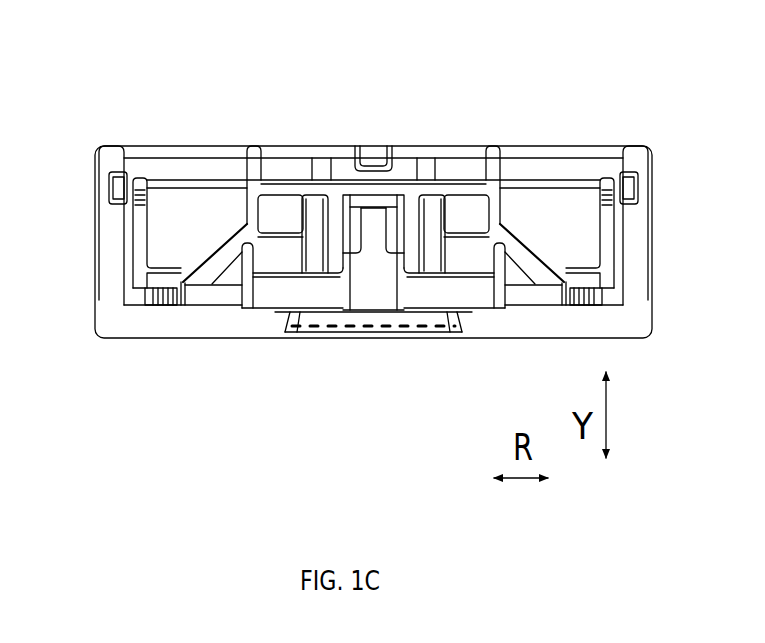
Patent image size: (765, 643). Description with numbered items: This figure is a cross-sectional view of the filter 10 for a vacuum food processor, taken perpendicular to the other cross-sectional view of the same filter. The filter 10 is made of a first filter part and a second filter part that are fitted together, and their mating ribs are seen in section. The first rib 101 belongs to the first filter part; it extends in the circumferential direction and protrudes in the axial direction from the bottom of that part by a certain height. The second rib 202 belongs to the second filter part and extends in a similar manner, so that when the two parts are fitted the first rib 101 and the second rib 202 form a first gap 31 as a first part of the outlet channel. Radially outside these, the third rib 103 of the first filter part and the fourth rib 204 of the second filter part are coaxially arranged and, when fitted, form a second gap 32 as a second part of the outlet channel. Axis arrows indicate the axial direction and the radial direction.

The filter 10 is at (181, 70).
The fourth rib 204 is at (133, 240).
The second rib 202 is at (178, 280).
The second gap 32 is at (149, 312).
The third rib 103 is at (161, 306).
The first gap 31 is at (213, 294).
The first rib 101 is at (248, 294).